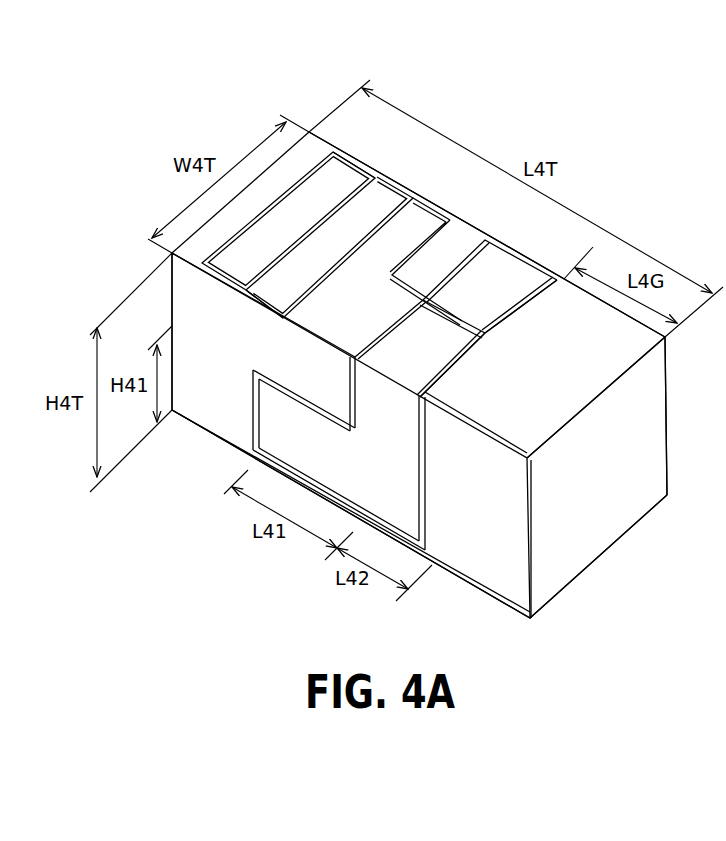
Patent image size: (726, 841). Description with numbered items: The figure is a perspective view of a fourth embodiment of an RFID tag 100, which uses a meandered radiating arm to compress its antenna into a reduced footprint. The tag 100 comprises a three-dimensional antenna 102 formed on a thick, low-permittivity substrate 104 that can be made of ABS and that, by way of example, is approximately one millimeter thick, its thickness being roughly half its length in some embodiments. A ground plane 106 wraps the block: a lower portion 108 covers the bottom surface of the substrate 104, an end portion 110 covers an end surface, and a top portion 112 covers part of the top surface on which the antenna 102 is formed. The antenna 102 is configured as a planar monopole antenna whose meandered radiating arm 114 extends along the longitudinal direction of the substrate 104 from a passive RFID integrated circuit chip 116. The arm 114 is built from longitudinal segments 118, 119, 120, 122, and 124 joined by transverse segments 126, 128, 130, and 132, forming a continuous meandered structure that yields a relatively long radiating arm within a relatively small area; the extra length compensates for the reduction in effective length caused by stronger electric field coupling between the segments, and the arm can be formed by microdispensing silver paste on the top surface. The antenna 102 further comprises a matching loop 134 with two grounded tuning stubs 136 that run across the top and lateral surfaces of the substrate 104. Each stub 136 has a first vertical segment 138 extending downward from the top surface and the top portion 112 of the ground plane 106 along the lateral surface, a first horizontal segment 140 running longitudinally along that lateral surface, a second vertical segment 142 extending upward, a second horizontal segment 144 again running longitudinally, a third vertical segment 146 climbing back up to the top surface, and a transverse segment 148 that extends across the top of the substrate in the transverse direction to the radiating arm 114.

The RFID tag 100 is at (619, 187).
The three-dimensional antenna 102 is at (251, 352).
The substrate 104 is at (453, 568).
The ground plane 106 is at (648, 548).
The lower portion 108 is at (512, 612).
The end portion 110 is at (563, 580).
The top portion 112 is at (662, 345).
The meandered radiating arm 114 is at (426, 192).
The passive RFID integrated circuit chip 116 is at (486, 325).
The longitudinal segment 118 is at (456, 322).
The longitudinal segment 119 is at (436, 208).
The longitudinal segment 120 is at (262, 297).
The longitudinal segment 122 is at (354, 160).
The longitudinal segment 124 is at (176, 261).
The transverse segment 126 is at (403, 265).
The transverse segment 128 is at (297, 304).
The transverse segment 130 is at (351, 186).
The transverse segment 132 is at (219, 258).
The matching loop 134 is at (222, 452).
The grounded tuning stub 136 is at (433, 485).
The first vertical segment 138 is at (418, 472).
The first horizontal segment 140 is at (320, 477).
The second vertical segment 142 is at (262, 393).
The second horizontal segment 144 is at (285, 381).
The third vertical segment 146 is at (356, 402).
The transverse segment 148 is at (489, 238).